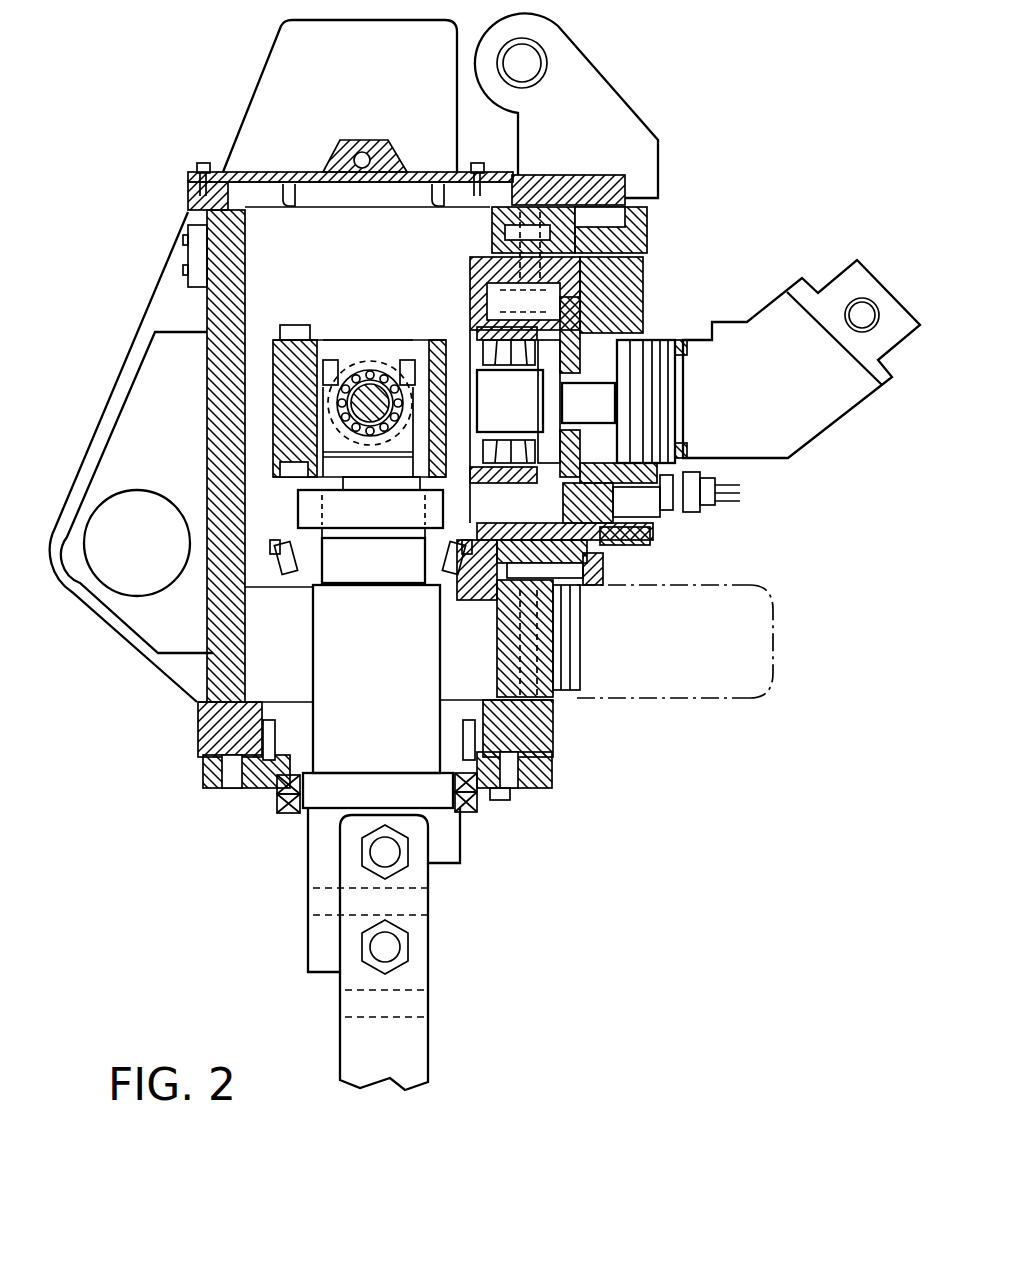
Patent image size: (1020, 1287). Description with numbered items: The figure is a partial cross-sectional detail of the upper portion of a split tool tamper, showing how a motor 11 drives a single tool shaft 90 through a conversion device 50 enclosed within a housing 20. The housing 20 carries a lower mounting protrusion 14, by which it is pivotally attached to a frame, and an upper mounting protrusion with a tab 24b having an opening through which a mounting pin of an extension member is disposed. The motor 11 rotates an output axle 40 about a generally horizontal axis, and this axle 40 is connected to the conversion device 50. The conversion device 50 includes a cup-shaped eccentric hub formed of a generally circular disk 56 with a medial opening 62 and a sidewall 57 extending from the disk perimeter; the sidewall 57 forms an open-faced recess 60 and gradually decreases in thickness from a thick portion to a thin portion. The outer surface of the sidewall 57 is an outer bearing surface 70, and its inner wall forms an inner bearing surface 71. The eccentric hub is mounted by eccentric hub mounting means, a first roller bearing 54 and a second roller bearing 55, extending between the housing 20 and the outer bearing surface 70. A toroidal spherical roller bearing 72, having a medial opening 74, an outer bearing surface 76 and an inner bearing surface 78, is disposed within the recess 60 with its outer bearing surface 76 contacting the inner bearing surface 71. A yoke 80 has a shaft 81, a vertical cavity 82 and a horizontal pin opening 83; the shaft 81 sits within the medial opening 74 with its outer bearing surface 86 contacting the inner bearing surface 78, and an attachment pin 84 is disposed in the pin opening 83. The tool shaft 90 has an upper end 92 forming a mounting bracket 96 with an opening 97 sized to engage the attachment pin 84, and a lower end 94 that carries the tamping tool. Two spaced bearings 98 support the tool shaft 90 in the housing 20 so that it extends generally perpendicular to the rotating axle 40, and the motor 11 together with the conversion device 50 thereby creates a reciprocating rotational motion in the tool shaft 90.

The motor 11 is at (813, 430).
The lower mounting protrusion 14 is at (137, 375).
The housing 20 is at (612, 170).
The tab 24b is at (597, 103).
The rotating output axle 40 is at (605, 395).
The conversion device 50 is at (685, 180).
The first roller bearing 54 is at (640, 293).
The second roller bearing 55 is at (650, 333).
The disk 56 is at (673, 420).
The sidewall 57 is at (480, 290).
The recess 60 is at (600, 402).
The medial opening 62 is at (665, 362).
The outer bearing surface 70 is at (605, 255).
The inner bearing surface 71 is at (472, 370).
The spherical roller bearing 72 is at (673, 438).
The medial opening 74 is at (583, 550).
The outer bearing surface 76 is at (655, 537).
The inner bearing surface 78 is at (470, 360).
The yoke 80 is at (493, 397).
The shaft 81 is at (430, 491).
The vertical cavity 82 is at (357, 348).
The horizontal pin opening 83 is at (337, 403).
The attachment pin 84 is at (375, 385).
The outer bearing surface 86 is at (430, 537).
The tool shaft 90 is at (327, 625).
The upper end 92 is at (342, 470).
The lower end 94 is at (320, 862).
The mounting bracket 96 is at (333, 457).
The opening 97 is at (343, 357).
The bearings 98 is at (480, 690).